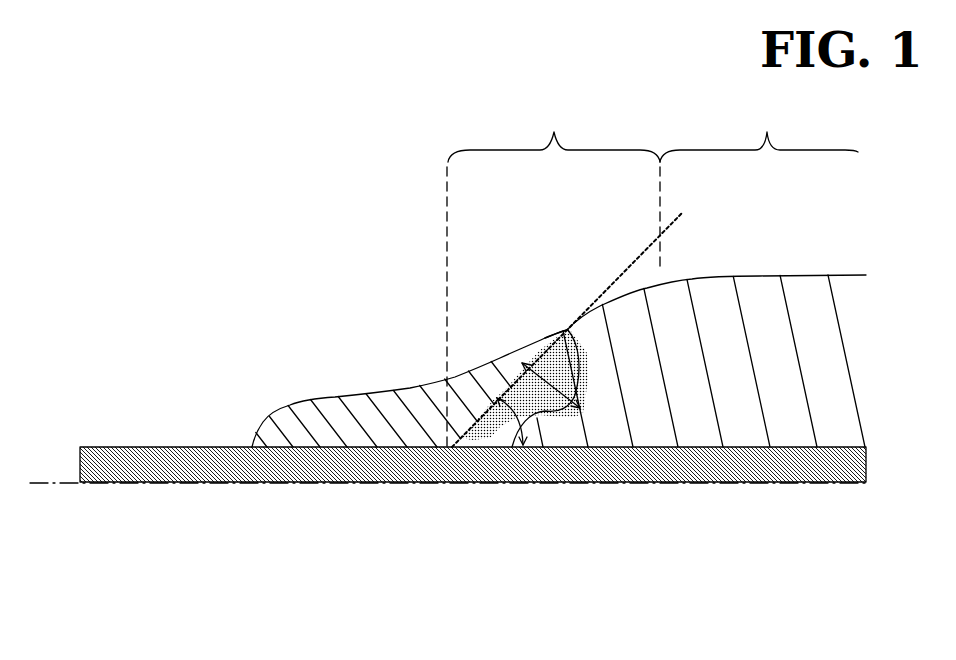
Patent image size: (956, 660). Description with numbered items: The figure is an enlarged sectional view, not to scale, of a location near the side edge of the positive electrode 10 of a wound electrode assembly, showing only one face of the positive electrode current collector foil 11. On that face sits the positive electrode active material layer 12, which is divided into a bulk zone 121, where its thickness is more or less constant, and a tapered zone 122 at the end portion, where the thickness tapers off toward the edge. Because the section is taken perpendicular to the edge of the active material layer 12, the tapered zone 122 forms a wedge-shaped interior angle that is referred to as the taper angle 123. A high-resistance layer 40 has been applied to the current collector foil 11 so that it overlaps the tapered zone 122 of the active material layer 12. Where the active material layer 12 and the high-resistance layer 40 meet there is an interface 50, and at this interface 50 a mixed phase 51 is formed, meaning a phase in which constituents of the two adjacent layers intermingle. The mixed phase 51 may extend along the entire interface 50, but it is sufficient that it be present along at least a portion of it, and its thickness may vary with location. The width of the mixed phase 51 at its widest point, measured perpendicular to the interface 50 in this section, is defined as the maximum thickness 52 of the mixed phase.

The positive electrode 10 is at (263, 147).
The positive electrode current collector foil 11 is at (338, 472).
The positive electrode active material layer 12 is at (778, 375).
The bulk zone 121 is at (759, 185).
The tapered zone 122 is at (553, 273).
The taper angle 123 is at (579, 416).
The high-resistance layer 40 is at (350, 410).
The interface 50 is at (488, 390).
The mixed phase 51 is at (553, 345).
The maximum thickness of the mixed phase 52 is at (567, 330).